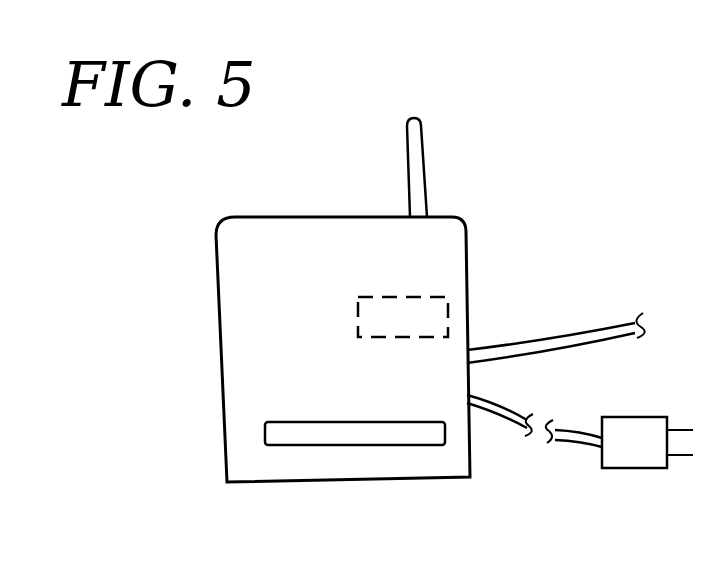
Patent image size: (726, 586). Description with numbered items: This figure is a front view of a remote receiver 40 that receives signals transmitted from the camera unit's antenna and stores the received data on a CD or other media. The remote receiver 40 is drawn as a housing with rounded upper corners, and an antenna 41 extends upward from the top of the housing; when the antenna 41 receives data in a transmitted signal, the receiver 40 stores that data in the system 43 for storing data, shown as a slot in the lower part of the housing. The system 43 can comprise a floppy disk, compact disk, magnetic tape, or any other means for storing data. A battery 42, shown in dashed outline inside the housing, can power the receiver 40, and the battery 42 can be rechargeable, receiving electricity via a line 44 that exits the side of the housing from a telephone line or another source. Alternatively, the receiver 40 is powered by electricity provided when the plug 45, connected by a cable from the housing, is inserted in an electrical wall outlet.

The remote receiver 40 is at (484, 244).
The antenna 41 is at (422, 160).
The battery 42 is at (367, 295).
The system for storing data 43 is at (330, 417).
The line 44 is at (543, 328).
The plug 45 is at (636, 487).